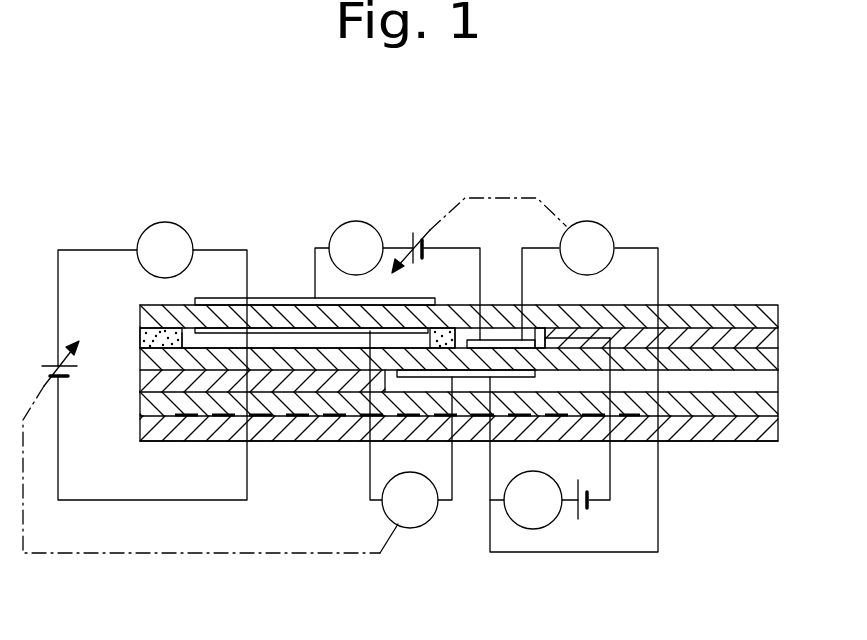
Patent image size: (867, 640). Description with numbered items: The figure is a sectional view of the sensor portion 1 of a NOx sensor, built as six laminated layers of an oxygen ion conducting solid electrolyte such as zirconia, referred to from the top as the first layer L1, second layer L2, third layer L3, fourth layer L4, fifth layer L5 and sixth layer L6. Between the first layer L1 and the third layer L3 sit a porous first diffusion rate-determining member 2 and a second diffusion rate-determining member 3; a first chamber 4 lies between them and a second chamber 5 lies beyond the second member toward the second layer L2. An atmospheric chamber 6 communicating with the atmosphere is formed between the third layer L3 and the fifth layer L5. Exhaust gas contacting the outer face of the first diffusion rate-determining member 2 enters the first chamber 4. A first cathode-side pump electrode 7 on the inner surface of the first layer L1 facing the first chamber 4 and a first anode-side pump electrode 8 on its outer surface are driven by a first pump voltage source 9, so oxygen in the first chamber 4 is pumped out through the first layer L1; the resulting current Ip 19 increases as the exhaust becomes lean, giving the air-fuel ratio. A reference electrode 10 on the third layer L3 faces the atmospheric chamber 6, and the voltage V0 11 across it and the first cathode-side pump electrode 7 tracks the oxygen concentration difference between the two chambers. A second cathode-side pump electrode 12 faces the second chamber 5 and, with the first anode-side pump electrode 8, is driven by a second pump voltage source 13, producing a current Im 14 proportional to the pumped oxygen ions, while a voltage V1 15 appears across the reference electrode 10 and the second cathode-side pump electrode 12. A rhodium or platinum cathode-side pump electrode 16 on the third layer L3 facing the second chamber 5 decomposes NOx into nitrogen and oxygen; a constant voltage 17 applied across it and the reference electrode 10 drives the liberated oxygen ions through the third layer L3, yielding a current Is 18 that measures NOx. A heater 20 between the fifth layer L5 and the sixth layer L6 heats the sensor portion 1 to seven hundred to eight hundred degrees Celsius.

The sensor portion 1 is at (770, 260).
The first diffusion rate-determining member 2 is at (140, 337).
The second diffusion rate-determining member 3 is at (445, 328).
The first chamber 4 is at (279, 334).
The second chamber 5 is at (490, 340).
The atmospheric chamber 6 is at (732, 378).
The first cathode-side pump electrode 7 is at (299, 330).
The first anode-side pump electrode 8 is at (258, 298).
The first pump voltage source 9 is at (53, 362).
The reference electrode 10 is at (470, 378).
The voltage V0 11 is at (418, 528).
The second cathode-side pump electrode 12 is at (542, 333).
The second pump voltage source 13 is at (418, 227).
The electric current Im 14 is at (352, 221).
The voltage V1 15 is at (605, 228).
The cathode-side pump electrode for detecting NOx 16 is at (506, 330).
The constant voltage 17 is at (587, 518).
The electric current Is 18 is at (540, 529).
The current Ip 19 is at (153, 225).
The heater 20 is at (327, 417).
The first layer L1 is at (777, 315).
The second layer L2 is at (770, 340).
The third layer L3 is at (768, 358).
The fourth layer L4 is at (140, 378).
The fifth layer L5 is at (765, 405).
The sixth layer L6 is at (772, 427).